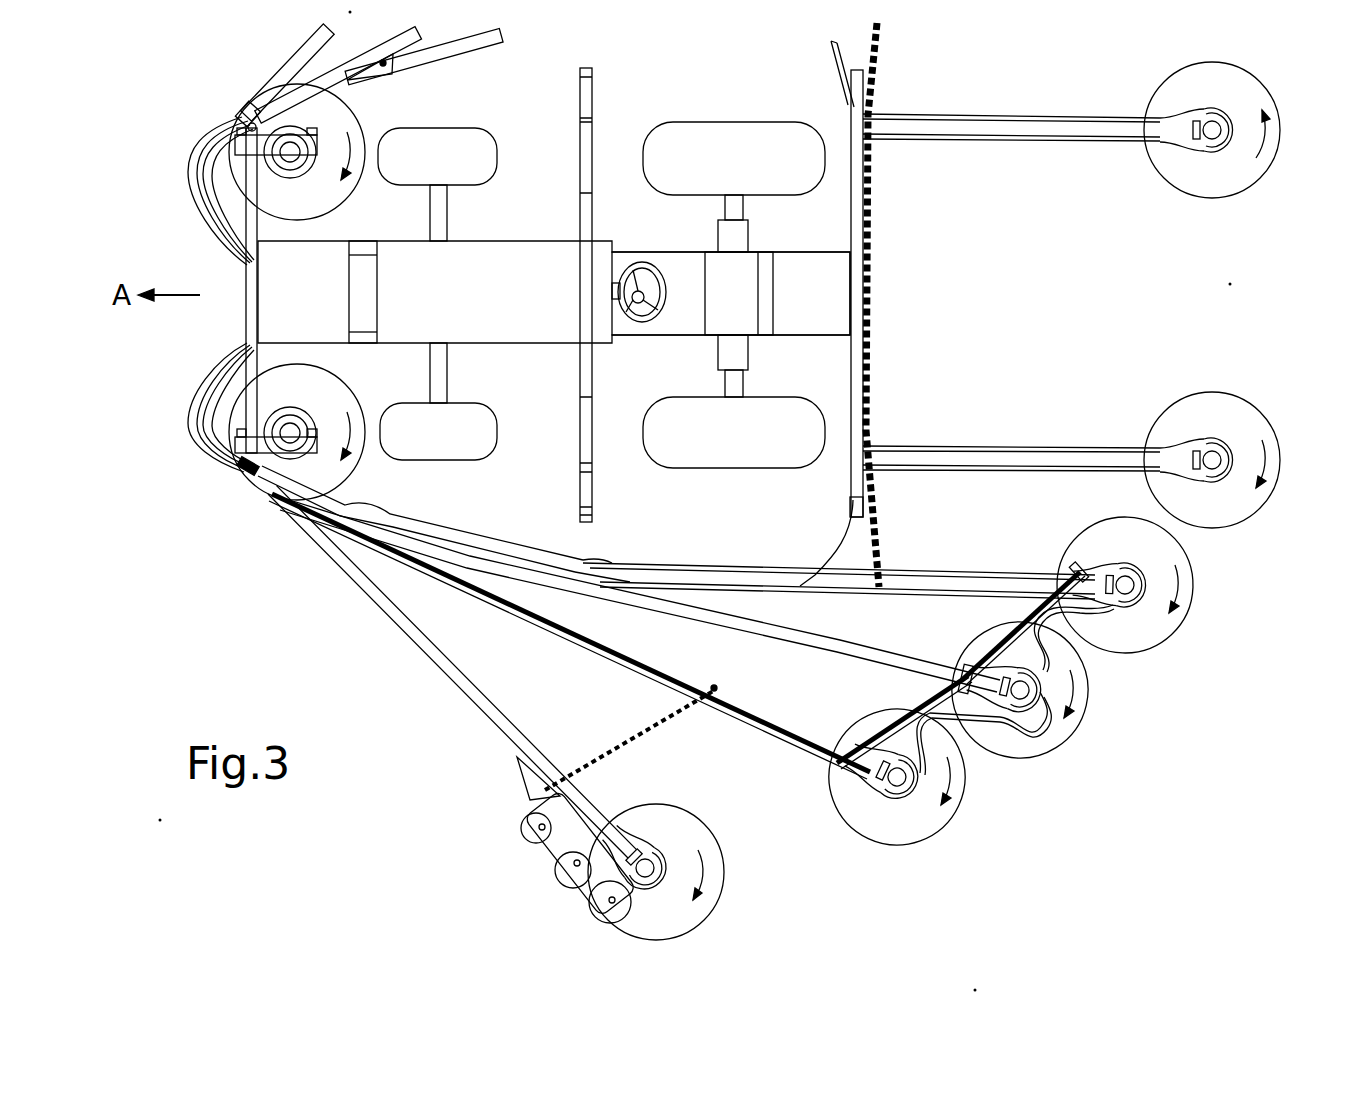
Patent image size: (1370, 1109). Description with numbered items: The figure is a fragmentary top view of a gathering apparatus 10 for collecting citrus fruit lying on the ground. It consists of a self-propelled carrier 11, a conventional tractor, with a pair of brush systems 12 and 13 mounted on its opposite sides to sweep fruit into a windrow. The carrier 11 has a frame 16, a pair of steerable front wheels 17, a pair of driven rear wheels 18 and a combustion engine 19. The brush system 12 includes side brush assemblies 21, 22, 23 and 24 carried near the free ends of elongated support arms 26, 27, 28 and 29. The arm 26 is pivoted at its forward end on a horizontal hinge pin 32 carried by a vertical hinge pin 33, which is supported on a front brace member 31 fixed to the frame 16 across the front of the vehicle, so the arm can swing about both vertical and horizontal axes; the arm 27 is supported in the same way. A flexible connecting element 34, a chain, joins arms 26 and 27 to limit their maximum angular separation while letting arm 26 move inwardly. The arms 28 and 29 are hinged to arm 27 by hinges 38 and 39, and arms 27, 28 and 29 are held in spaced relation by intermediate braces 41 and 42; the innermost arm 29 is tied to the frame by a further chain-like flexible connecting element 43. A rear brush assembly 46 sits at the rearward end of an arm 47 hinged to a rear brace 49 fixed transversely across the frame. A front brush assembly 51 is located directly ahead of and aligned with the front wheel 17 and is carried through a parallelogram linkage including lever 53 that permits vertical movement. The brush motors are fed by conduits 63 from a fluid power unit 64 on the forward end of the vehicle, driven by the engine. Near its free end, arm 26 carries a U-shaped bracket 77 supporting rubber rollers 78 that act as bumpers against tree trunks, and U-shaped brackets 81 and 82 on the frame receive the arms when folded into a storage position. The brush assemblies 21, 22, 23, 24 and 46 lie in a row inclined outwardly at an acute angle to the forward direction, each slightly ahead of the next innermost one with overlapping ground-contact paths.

The gathering apparatus 10 is at (252, 604).
The carrier 11 is at (540, 242).
The brush system 12 is at (896, 878).
The brush system 13 is at (297, 37).
The frame 16 is at (683, 320).
The steerable front wheels 17 is at (476, 140).
The driven rear wheels 18 is at (734, 132).
The combustion engine 19 is at (485, 330).
The side brush assembly 21 is at (692, 905).
The side brush assembly 22 is at (930, 828).
The side brush assembly 23 is at (1040, 752).
The side brush assembly 24 is at (1175, 620).
The support arm 26 is at (445, 668).
The support arm 27 is at (563, 638).
The support arm 28 is at (723, 616).
The support arm 29 is at (814, 578).
The front brace member 31 is at (250, 305).
The horizontal hinge pin 32 is at (245, 480).
The vertical hinge pin 33 is at (266, 495).
The flexible connecting element 34 is at (627, 738).
The hinge 38 is at (386, 514).
The hinge 39 is at (614, 568).
The intermediate brace 41 is at (902, 676).
The intermediate brace 42 is at (1040, 612).
The flexible connecting element 43 is at (882, 533).
The rear brush assembly 46 is at (1275, 446).
The arm 47 is at (1000, 455).
The rear brace 49 is at (860, 343).
The front brush assembly 51 is at (318, 382).
The lever 53 is at (330, 468).
The conduits 63 is at (993, 722).
The fluid power unit 64 is at (328, 255).
The U-shaped bracket 81 is at (853, 498).
The U-shaped bracket 82 is at (580, 488).
The U-shaped bracket 77 is at (553, 852).
The rollers 78 is at (524, 826).